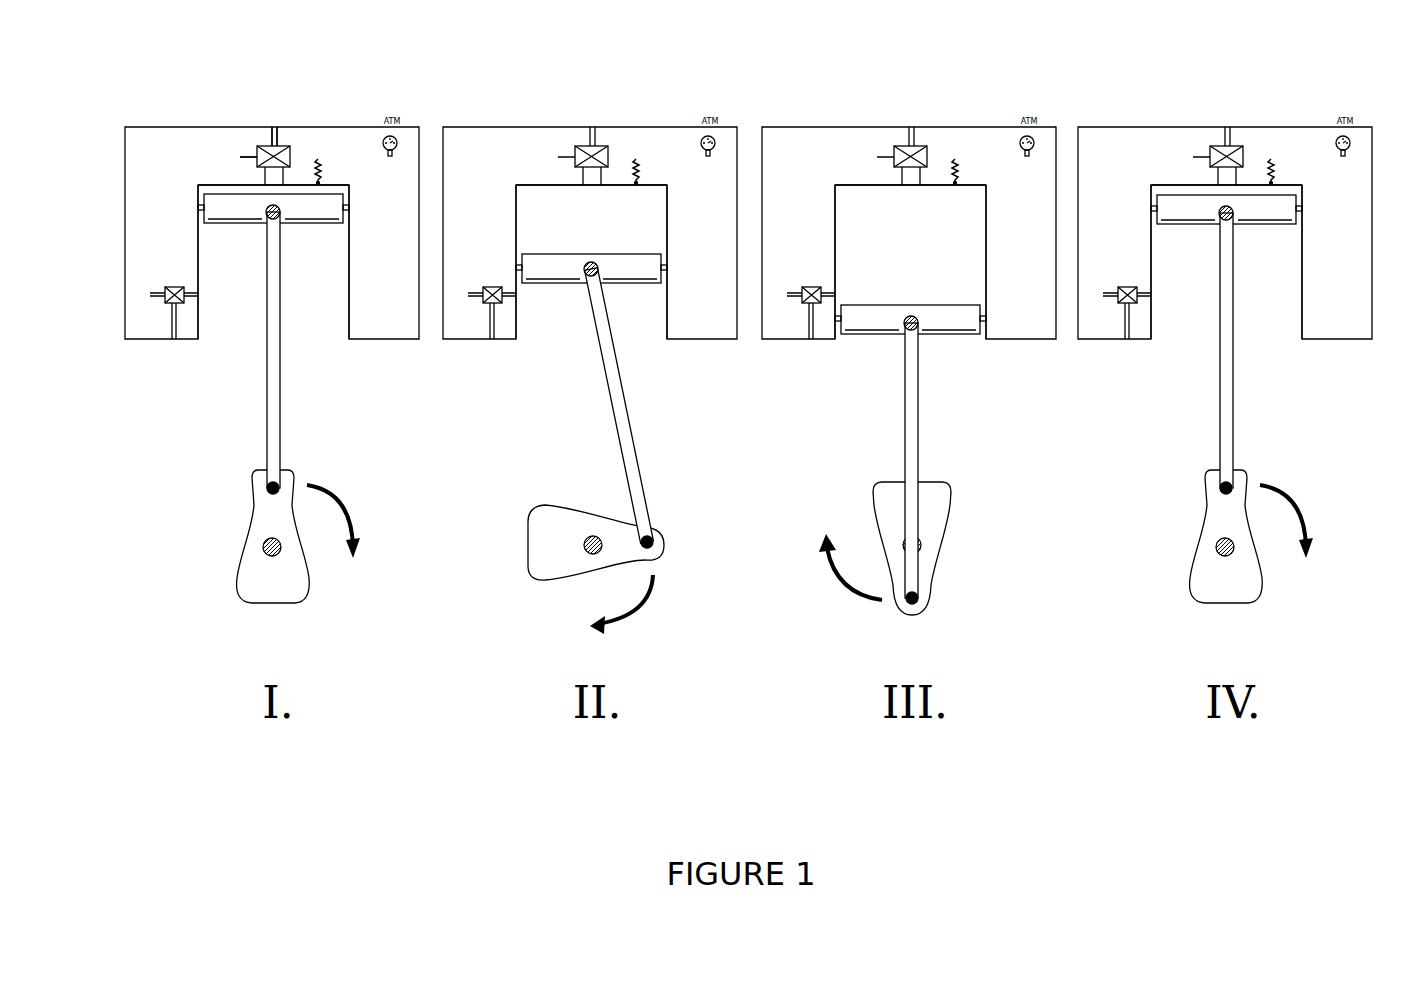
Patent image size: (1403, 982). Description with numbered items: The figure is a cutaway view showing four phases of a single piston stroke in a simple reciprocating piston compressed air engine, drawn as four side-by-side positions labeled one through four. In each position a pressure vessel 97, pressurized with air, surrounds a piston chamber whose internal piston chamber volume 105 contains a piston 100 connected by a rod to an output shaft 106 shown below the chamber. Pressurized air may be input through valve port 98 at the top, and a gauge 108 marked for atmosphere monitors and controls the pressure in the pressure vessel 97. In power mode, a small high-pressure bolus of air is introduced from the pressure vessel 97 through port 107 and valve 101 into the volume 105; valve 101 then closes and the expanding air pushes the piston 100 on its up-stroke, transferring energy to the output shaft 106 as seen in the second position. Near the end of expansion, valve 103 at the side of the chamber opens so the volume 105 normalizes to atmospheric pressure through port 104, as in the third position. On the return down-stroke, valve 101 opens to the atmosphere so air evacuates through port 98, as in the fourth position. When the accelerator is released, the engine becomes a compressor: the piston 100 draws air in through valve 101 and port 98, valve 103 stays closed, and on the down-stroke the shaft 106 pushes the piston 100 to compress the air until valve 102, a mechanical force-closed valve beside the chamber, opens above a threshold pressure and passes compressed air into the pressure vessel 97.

The pressure vessel 97 is at (376, 321).
The valve port 98 is at (274, 127).
The piston 100 is at (295, 216).
The valve 101 is at (288, 146).
The valve 102 is at (1270, 163).
The valve 103 is at (805, 303).
The port 104 is at (812, 340).
The internal piston chamber volume 105 is at (230, 190).
The output shaft 106 is at (287, 585).
The port 107 is at (245, 155).
The gauge 108 is at (397, 137).